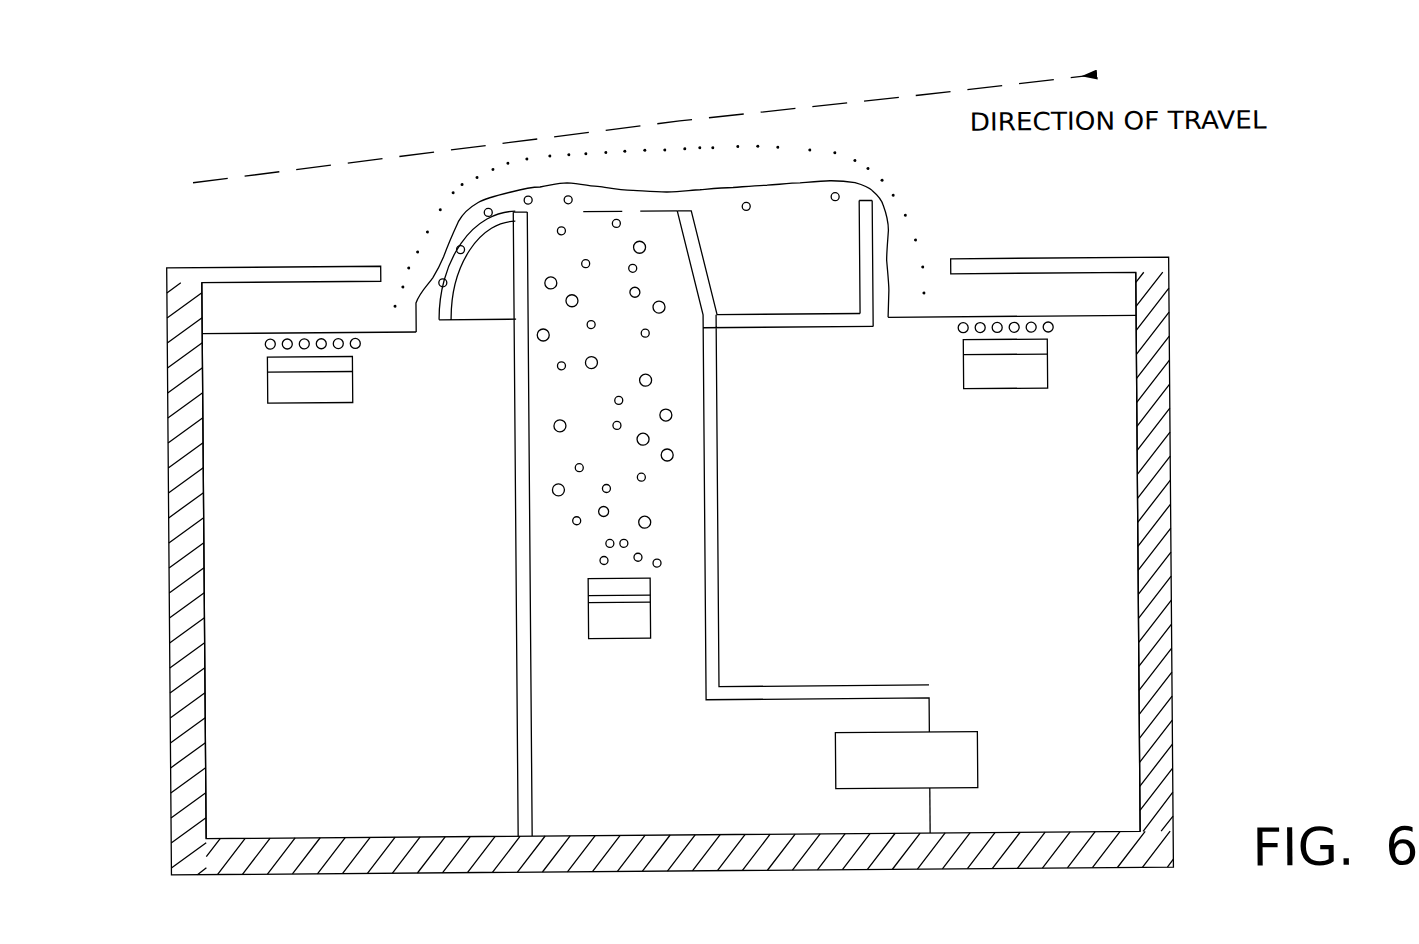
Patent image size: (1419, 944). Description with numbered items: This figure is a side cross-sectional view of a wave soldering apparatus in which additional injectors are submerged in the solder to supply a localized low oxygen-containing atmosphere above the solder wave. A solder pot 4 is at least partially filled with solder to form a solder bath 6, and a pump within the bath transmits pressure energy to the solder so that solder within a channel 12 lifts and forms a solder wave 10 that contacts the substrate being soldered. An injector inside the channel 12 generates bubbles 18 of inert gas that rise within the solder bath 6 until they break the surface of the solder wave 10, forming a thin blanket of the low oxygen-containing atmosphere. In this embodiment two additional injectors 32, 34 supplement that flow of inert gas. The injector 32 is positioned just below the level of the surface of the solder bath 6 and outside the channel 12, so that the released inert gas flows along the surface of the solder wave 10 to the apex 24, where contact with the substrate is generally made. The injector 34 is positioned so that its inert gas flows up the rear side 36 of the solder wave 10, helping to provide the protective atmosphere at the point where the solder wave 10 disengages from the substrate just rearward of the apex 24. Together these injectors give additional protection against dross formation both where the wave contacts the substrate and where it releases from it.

The solder pot 4 is at (1175, 672).
The solder bath 6 is at (1090, 341).
The solder wave 10 is at (789, 178).
The channel 12 is at (715, 594).
The bubbles 18 is at (550, 417).
The apex 24 is at (684, 133).
The injector 32 is at (333, 402).
The injector 34 is at (1013, 389).
The rear side 36 is at (886, 205).